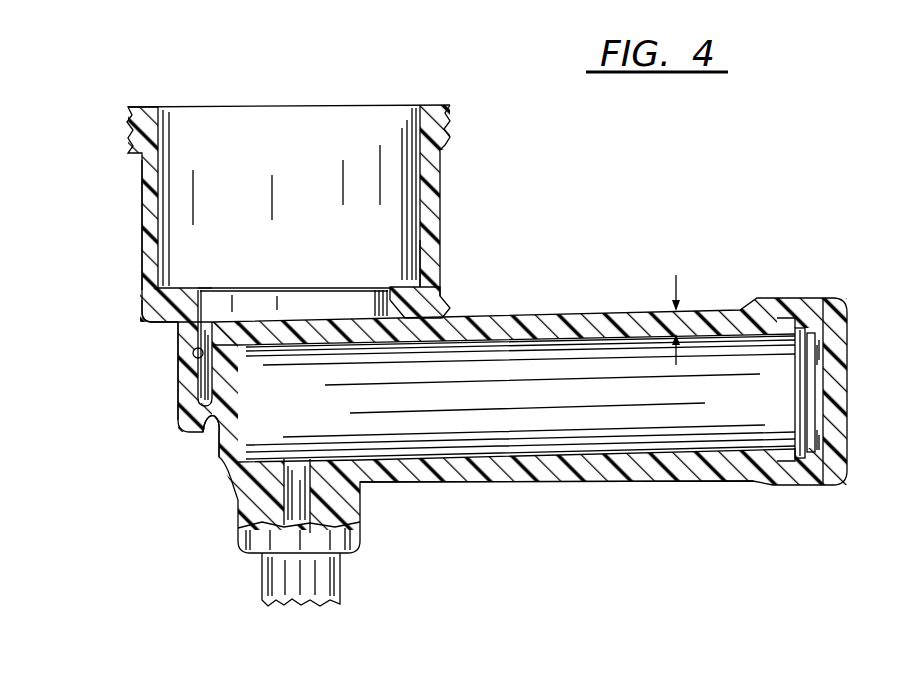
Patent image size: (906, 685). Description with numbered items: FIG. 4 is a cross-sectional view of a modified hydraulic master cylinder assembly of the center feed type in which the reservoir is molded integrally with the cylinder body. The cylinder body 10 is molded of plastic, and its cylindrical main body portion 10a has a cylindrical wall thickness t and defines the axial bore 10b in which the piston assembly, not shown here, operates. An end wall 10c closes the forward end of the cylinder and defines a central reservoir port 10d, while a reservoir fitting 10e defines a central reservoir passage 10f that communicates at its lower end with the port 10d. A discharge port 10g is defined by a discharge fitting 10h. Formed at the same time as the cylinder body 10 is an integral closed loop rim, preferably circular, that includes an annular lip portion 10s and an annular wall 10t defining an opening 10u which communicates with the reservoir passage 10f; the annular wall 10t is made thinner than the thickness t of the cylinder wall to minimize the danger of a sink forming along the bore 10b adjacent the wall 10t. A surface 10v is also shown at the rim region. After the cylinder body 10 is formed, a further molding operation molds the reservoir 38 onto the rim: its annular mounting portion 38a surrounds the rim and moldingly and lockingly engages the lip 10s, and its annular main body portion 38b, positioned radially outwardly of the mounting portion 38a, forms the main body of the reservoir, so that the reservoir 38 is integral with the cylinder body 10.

The cylinder body 10 is at (590, 308).
The main body portion 10a is at (728, 308).
The axial bore 10b is at (570, 444).
The end wall 10c is at (240, 382).
The reservoir port 10d is at (208, 420).
The reservoir fitting 10e is at (178, 396).
The reservoir passage 10f is at (193, 353).
The discharge port 10g is at (304, 461).
The discharge fitting 10h is at (240, 540).
The annular lip portion 10s is at (436, 304).
The annular wall 10t is at (372, 288).
The opening 10u is at (205, 289).
The inner wall surface 10v is at (398, 274).
The reservoir 38 is at (128, 243).
The annular mounting portion 38a is at (142, 304).
The annular main body portion 38b is at (142, 185).